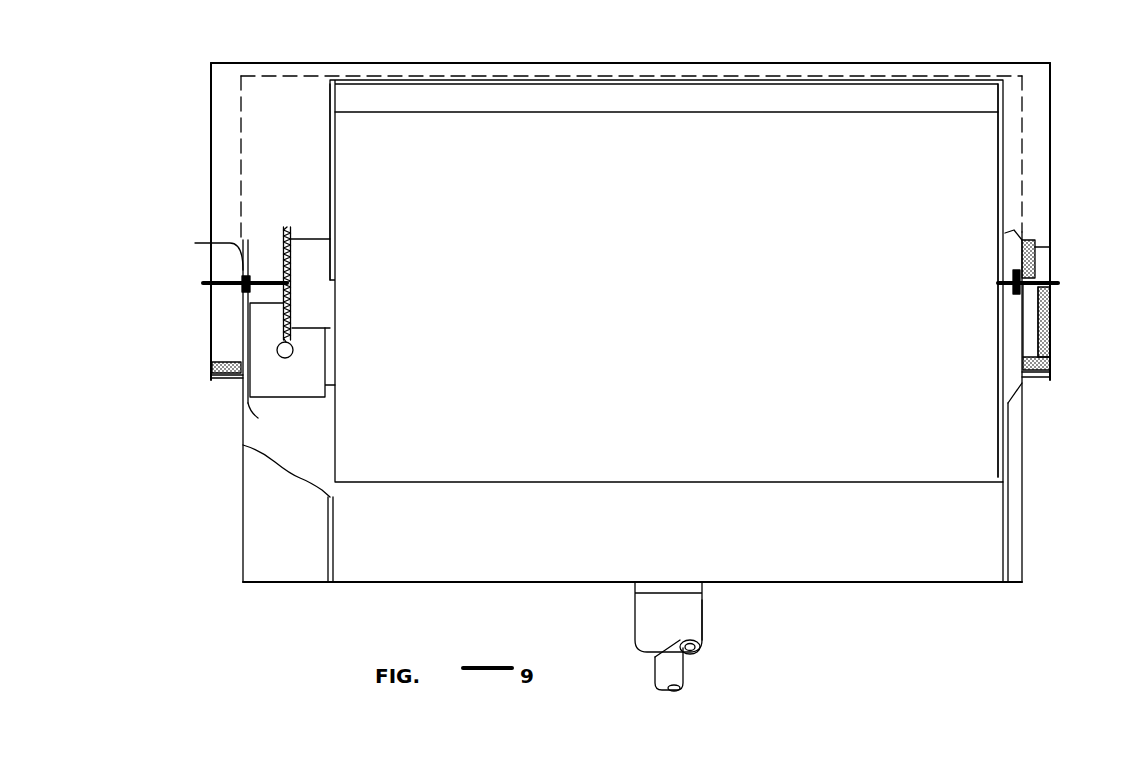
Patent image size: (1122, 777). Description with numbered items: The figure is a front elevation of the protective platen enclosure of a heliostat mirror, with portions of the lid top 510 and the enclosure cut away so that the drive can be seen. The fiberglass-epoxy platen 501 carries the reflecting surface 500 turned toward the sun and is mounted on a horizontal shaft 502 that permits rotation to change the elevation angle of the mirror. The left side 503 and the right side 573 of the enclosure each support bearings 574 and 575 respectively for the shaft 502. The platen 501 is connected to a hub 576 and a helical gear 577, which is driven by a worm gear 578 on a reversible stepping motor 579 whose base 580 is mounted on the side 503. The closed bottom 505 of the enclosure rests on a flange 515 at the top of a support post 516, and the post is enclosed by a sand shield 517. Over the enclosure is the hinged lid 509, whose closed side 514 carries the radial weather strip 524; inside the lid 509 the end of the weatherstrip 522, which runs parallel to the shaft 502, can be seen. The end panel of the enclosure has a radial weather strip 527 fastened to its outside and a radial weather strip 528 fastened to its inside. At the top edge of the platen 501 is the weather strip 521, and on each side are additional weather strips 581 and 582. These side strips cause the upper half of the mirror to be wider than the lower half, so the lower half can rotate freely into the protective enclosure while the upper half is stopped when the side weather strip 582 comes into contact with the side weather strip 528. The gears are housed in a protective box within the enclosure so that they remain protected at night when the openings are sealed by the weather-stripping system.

The reflecting surface 500 is at (666, 281).
The platen 501 is at (666, 99).
The horizontal shaft 502 is at (203, 283).
The flat end piece 503 is at (243, 440).
The closed surface bottom 505 is at (483, 582).
The hinged lid 509 is at (211, 186).
The closed top 510 is at (281, 108).
The closed side 514 is at (1050, 182).
The flange 515 is at (635, 586).
The support post 516 is at (684, 668).
The sand shield 517 is at (703, 620).
The weather strip 521 is at (551, 79).
The weatherstrip 522 is at (211, 372).
The radial weather strip 524 is at (1040, 330).
The radial weather strip 527 is at (1035, 262).
The side weather strip 528 is at (1003, 582).
The right side 573 is at (1028, 396).
The bearing 574 is at (196, 252).
The bearing 575 is at (1010, 294).
The hub 576 is at (311, 283).
The helical gear 577 is at (291, 215).
The worm gear 578 is at (293, 350).
The reversible stepping motor 579 is at (325, 385).
The base 580 is at (258, 418).
The weather strip 581 is at (330, 189).
The weather strip 582 is at (998, 172).